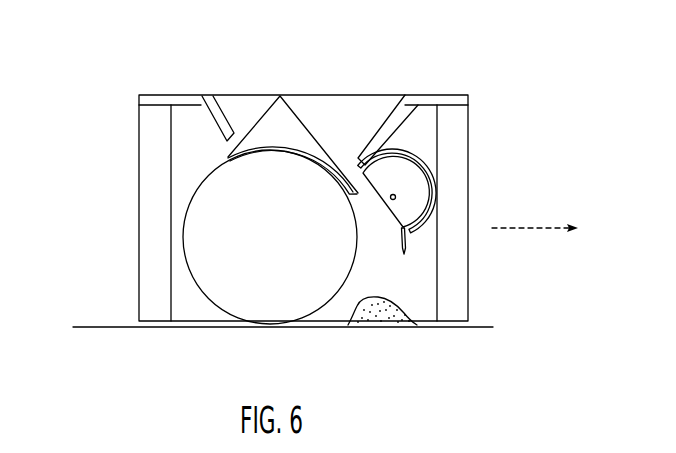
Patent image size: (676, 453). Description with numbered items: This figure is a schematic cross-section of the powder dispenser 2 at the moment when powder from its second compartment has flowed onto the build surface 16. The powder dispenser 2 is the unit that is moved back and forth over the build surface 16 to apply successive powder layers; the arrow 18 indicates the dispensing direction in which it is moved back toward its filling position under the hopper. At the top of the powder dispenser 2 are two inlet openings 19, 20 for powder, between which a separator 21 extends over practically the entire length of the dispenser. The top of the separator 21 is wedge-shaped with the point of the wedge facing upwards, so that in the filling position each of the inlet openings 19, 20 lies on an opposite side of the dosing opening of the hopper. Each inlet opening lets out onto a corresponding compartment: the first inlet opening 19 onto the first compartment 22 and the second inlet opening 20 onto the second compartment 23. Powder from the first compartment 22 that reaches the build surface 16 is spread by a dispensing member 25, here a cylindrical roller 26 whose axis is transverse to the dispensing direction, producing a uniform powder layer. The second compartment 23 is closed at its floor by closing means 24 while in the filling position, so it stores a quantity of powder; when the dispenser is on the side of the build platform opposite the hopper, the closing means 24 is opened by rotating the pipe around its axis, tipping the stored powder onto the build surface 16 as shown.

The powder dispenser 2 is at (110, 190).
The build surface 16 is at (104, 326).
The arrow 18 is at (533, 231).
The inlet opening 19 is at (232, 103).
The inlet opening 20 is at (352, 97).
The separator 21 is at (279, 122).
The first compartment 22 is at (186, 182).
The second compartment 23 is at (420, 200).
The closing means 24 is at (435, 182).
The dispensing member 25 is at (309, 302).
The cylindrical roller 26 is at (234, 298).